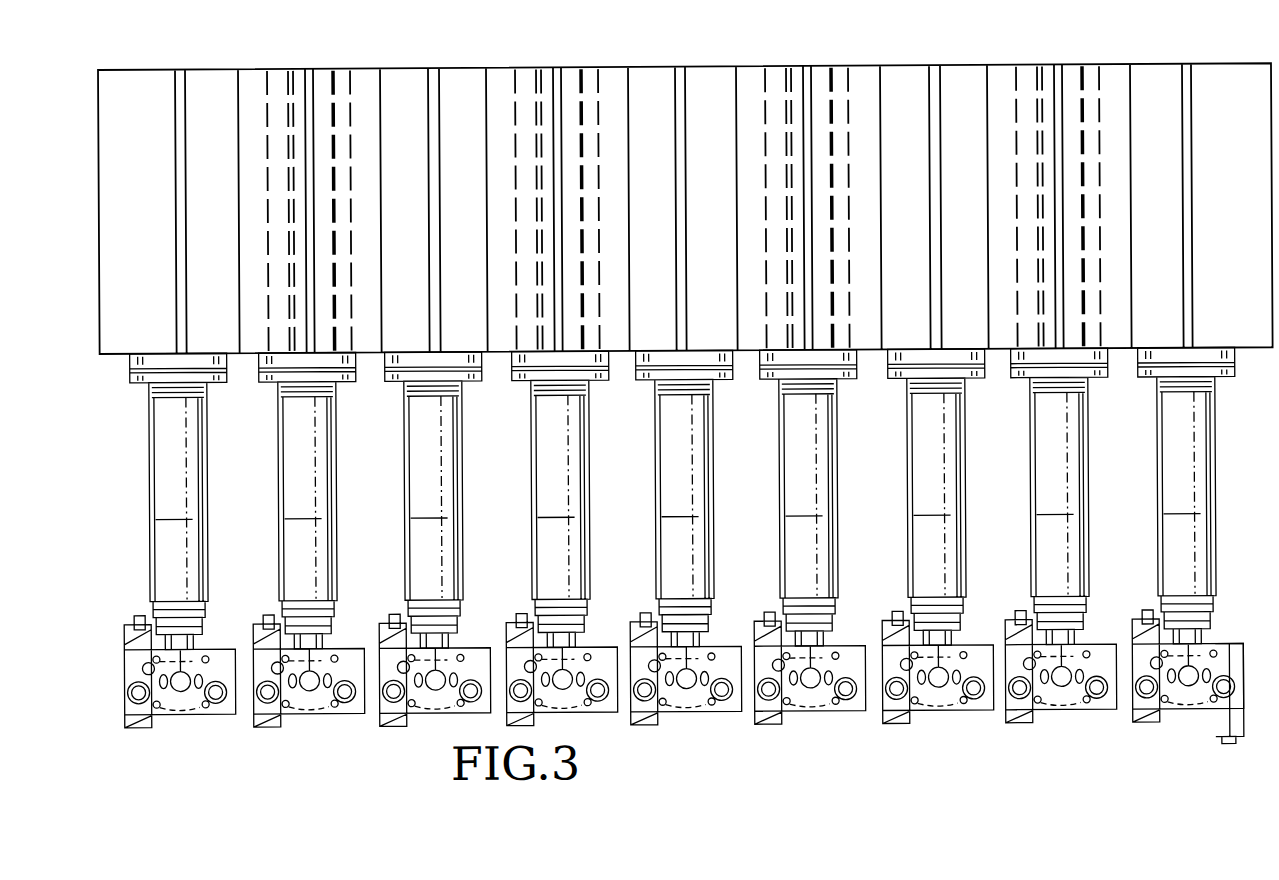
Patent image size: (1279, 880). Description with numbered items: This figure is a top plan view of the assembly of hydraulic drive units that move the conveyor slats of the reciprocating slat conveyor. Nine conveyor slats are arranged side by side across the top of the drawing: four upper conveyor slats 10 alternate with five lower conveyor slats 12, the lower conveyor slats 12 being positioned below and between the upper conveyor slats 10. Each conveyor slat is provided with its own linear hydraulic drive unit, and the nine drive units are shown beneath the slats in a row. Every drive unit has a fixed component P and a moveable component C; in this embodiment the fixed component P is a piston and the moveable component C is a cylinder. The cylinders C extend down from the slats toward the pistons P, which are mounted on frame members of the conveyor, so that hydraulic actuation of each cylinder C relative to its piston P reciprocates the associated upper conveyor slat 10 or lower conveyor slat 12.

The upper conveyor slat 10 is at (1060, 88).
The lower conveyor slat 12 is at (1187, 88).
The cylinder C is at (1237, 514).
The piston P is at (1236, 605).